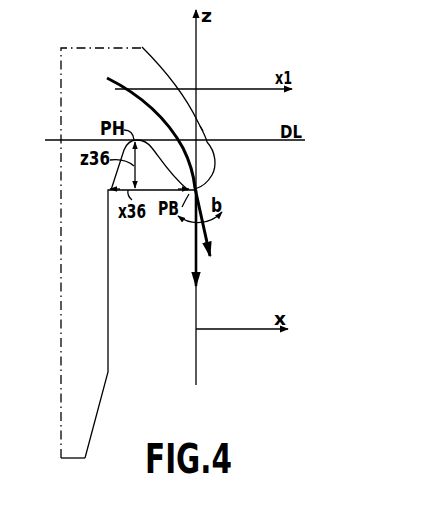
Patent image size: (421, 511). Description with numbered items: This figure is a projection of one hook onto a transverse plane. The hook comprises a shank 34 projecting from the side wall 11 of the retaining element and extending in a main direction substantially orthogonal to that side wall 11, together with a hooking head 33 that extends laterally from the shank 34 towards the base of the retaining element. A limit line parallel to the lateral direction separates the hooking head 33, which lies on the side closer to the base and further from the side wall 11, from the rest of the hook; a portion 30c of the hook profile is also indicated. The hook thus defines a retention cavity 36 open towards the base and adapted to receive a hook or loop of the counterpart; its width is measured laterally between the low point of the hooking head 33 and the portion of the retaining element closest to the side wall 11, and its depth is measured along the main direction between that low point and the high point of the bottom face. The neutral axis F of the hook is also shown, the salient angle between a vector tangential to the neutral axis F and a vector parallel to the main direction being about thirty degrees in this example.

The side wall 11 is at (96, 319).
The shank 34 is at (122, 68).
The hooking head 33 is at (205, 157).
The profile portion 30c is at (204, 126).
The retention cavity 36 is at (122, 176).
The neutral axis F is at (107, 80).